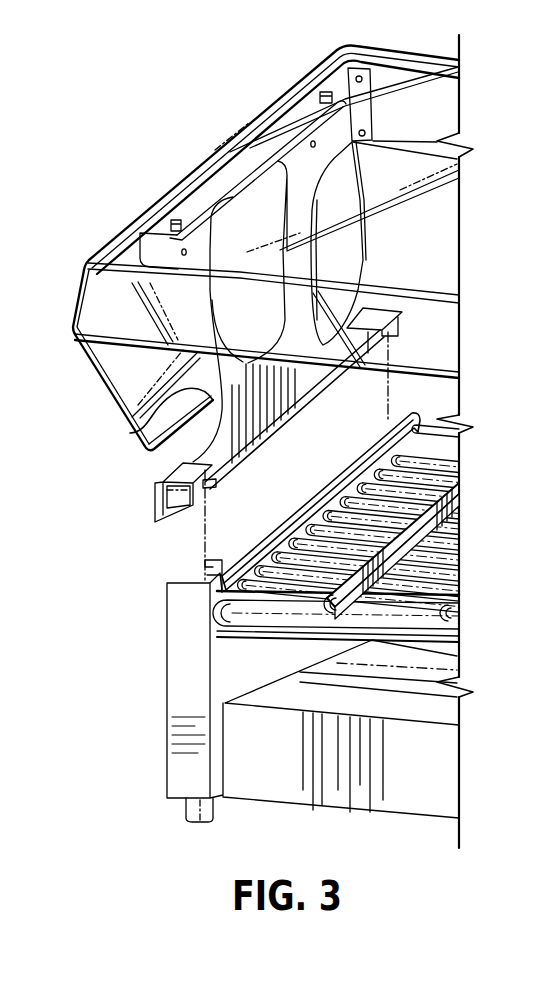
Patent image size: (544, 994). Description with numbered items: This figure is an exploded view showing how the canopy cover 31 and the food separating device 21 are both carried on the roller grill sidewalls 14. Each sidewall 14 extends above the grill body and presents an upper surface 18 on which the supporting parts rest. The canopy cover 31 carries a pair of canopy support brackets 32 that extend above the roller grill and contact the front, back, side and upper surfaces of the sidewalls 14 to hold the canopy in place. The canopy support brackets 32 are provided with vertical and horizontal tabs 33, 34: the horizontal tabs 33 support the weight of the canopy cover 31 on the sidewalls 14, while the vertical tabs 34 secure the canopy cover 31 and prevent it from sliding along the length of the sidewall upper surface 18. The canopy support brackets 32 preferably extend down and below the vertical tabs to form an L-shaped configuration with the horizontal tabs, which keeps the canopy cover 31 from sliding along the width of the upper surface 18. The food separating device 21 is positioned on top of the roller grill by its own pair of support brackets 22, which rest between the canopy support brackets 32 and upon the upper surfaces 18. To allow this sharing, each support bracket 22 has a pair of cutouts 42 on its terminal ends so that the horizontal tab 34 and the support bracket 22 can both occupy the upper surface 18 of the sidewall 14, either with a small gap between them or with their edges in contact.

The sidewalls 14 is at (163, 686).
The upper surface 18 is at (195, 576).
The food separating device 21 is at (417, 535).
The support brackets 22 is at (340, 457).
The canopy cover 31 is at (140, 131).
The canopy support brackets 32 is at (130, 433).
The horizontal tabs 33 is at (156, 517).
The vertical tabs 34 is at (218, 478).
The cutouts 42 is at (207, 584).